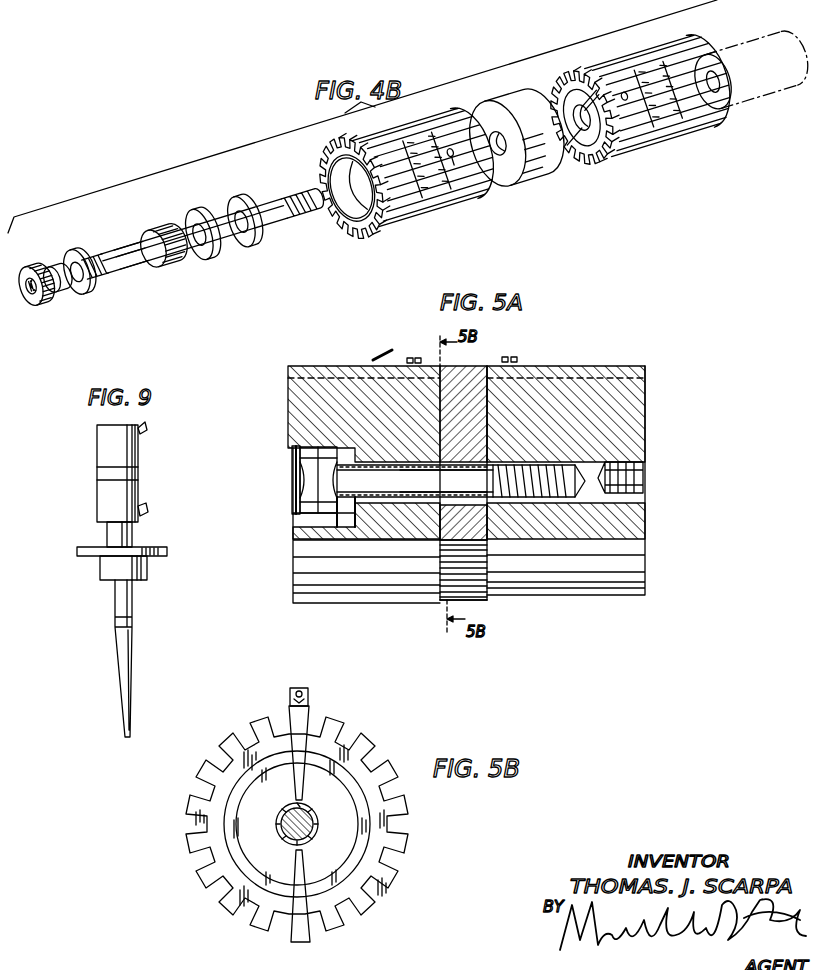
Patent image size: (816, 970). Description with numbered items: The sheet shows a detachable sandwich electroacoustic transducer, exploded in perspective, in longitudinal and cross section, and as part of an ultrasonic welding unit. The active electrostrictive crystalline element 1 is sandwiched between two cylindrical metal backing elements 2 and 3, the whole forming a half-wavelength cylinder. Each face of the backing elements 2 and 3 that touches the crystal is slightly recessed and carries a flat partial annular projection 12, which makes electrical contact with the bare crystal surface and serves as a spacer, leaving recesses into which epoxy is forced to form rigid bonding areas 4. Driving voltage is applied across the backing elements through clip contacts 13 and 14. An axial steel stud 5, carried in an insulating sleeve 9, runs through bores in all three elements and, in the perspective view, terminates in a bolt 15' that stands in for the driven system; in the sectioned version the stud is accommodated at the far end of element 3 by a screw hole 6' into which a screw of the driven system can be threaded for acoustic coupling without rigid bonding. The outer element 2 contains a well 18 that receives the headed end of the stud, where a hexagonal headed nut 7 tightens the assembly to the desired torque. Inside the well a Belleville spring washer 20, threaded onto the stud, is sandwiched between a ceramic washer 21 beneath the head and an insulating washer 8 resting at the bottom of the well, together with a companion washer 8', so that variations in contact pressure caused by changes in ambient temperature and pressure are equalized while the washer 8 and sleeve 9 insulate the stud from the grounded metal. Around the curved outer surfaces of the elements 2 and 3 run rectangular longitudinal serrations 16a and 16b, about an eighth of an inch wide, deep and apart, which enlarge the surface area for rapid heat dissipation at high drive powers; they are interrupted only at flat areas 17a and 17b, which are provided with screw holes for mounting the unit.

In FIG. 4B, the electrostrictive crystalline element 1 is at (538, 162).
In FIG. 4B, the metal backing element 2 is at (443, 207).
In FIG. 5A, the metal backing element 2 is at (293, 535).
In FIG. 4B, the metal backing element 3 is at (666, 143).
In FIG. 5A, the metal backing element 3 is at (630, 527).
In FIG. 5A, the bonding areas 4 is at (442, 597).
In FIG. 4B, the stud 5 is at (98, 257).
In FIG. 5A, the stud 5 is at (461, 481).
In FIG. 5B, the stud 5 is at (319, 831).
In FIG. 5A, the screw hole 6' is at (641, 473).
In FIG. 4B, the hexagonal headed nut 7 is at (40, 299).
In FIG. 5A, the hexagonal headed nut 7 is at (310, 480).
In FIG. 4B, the insulating washer 8 is at (203, 241).
In FIG. 5A, the insulating washer 8 is at (337, 564).
In FIG. 4B, the washer 8' is at (245, 232).
In FIG. 5A, the washer 8' is at (362, 563).
In FIG. 4B, the insulating sleeve 9 is at (116, 255).
In FIG. 5A, the insulating sleeve 9 is at (417, 510).
In FIG. 5B, the insulating sleeve 9 is at (311, 812).
In FIG. 4B, the annular projection 12 is at (568, 92).
In FIG. 5A, the annular projection 12 is at (468, 413).
In FIG. 5B, the annular projection 12 is at (242, 790).
In FIG. 5A, the clip contact 13 is at (380, 360).
In FIG. 5B, the clip contact 13 is at (309, 694).
In FIG. 5A, the clip contact 14 is at (523, 360).
In FIG. 4B, the bolt 15' is at (751, 76).
In FIG. 4B, the surface serrations 16a is at (370, 236).
In FIG. 5A, the surface serrations 16a is at (308, 380).
In FIG. 5B, the surface serrations 16a is at (235, 733).
In FIG. 4B, the surface serrations 16b is at (598, 160).
In FIG. 5A, the surface serrations 16b is at (623, 362).
In FIG. 4B, the flat area 17a is at (447, 146).
In FIG. 4B, the flat area 17b is at (624, 89).
In FIG. 4B, the well 18 is at (322, 170).
In FIG. 5A, the well 18 is at (291, 453).
In FIG. 4B, the spring washer 20 is at (156, 266).
In FIG. 4B, the ceramic washer 21 is at (83, 295).